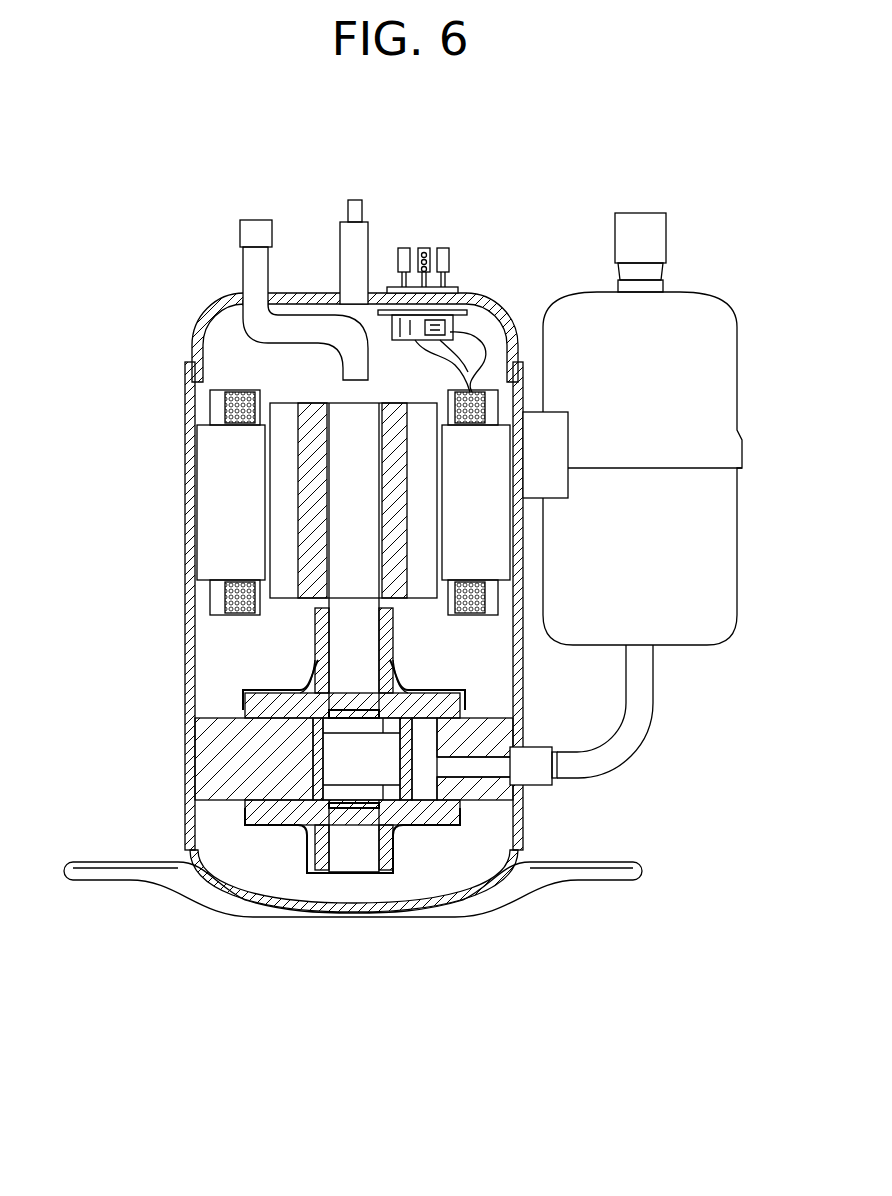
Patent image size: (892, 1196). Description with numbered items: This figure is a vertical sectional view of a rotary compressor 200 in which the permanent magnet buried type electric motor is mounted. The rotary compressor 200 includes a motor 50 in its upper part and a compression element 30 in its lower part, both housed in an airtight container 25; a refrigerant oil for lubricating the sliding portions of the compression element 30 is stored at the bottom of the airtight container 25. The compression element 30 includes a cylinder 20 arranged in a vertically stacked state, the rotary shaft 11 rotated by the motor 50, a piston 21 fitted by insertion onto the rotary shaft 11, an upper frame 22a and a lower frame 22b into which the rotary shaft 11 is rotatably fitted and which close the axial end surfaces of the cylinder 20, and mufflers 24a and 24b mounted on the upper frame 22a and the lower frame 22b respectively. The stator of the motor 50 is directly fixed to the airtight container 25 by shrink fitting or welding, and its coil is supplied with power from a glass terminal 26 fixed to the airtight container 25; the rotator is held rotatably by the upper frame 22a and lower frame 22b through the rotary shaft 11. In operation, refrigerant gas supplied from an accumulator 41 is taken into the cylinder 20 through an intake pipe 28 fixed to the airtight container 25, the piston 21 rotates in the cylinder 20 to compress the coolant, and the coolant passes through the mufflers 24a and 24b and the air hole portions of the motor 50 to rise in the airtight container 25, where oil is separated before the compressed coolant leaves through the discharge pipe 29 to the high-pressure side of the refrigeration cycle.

The rotary compressor 200 is at (135, 141).
The rotary shaft 11 is at (353, 638).
The cylinder 20 is at (312, 736).
The piston 21 is at (287, 767).
The upper frame 22a is at (463, 687).
The lower frame 22b is at (440, 810).
The muffler 24a is at (300, 676).
The muffler 24b is at (303, 843).
The airtight container 25 is at (212, 303).
The glass terminal 26 is at (447, 250).
The intake pipe 28 is at (626, 737).
The discharge pipe 29 is at (350, 372).
The compression element 30 is at (272, 843).
The accumulator 41 is at (737, 362).
The motor 50 is at (268, 388).